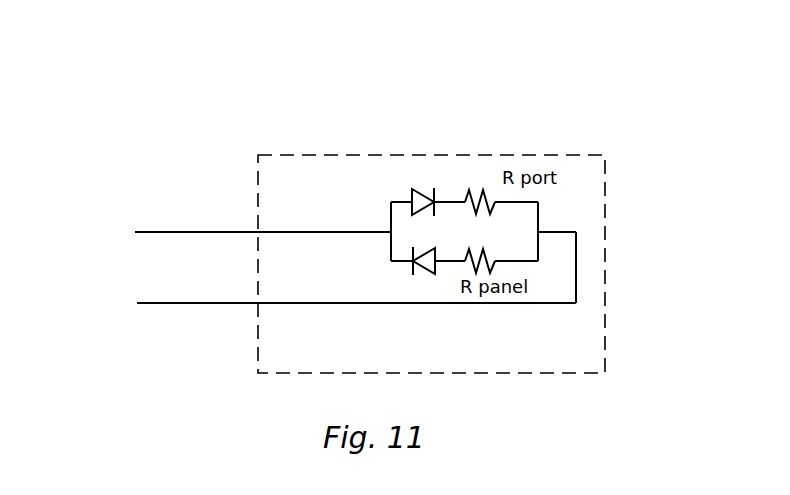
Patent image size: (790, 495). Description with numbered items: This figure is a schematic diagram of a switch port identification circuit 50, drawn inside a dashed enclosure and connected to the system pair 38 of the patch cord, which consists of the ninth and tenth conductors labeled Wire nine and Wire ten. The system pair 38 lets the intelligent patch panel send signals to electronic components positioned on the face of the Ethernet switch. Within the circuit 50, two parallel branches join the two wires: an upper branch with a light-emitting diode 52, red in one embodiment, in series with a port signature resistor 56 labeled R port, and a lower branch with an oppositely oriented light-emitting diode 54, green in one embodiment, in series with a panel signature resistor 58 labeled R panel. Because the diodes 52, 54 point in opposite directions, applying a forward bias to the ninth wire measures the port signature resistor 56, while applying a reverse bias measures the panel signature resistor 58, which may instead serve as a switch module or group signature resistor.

The system pair 38 is at (199, 175).
The switch port identification circuit 50 is at (557, 157).
The light-emitting diode 52 is at (425, 188).
The light-emitting diode 54 is at (428, 275).
The port signature resistor 56 is at (500, 210).
The panel signature resistor 58 is at (495, 253).